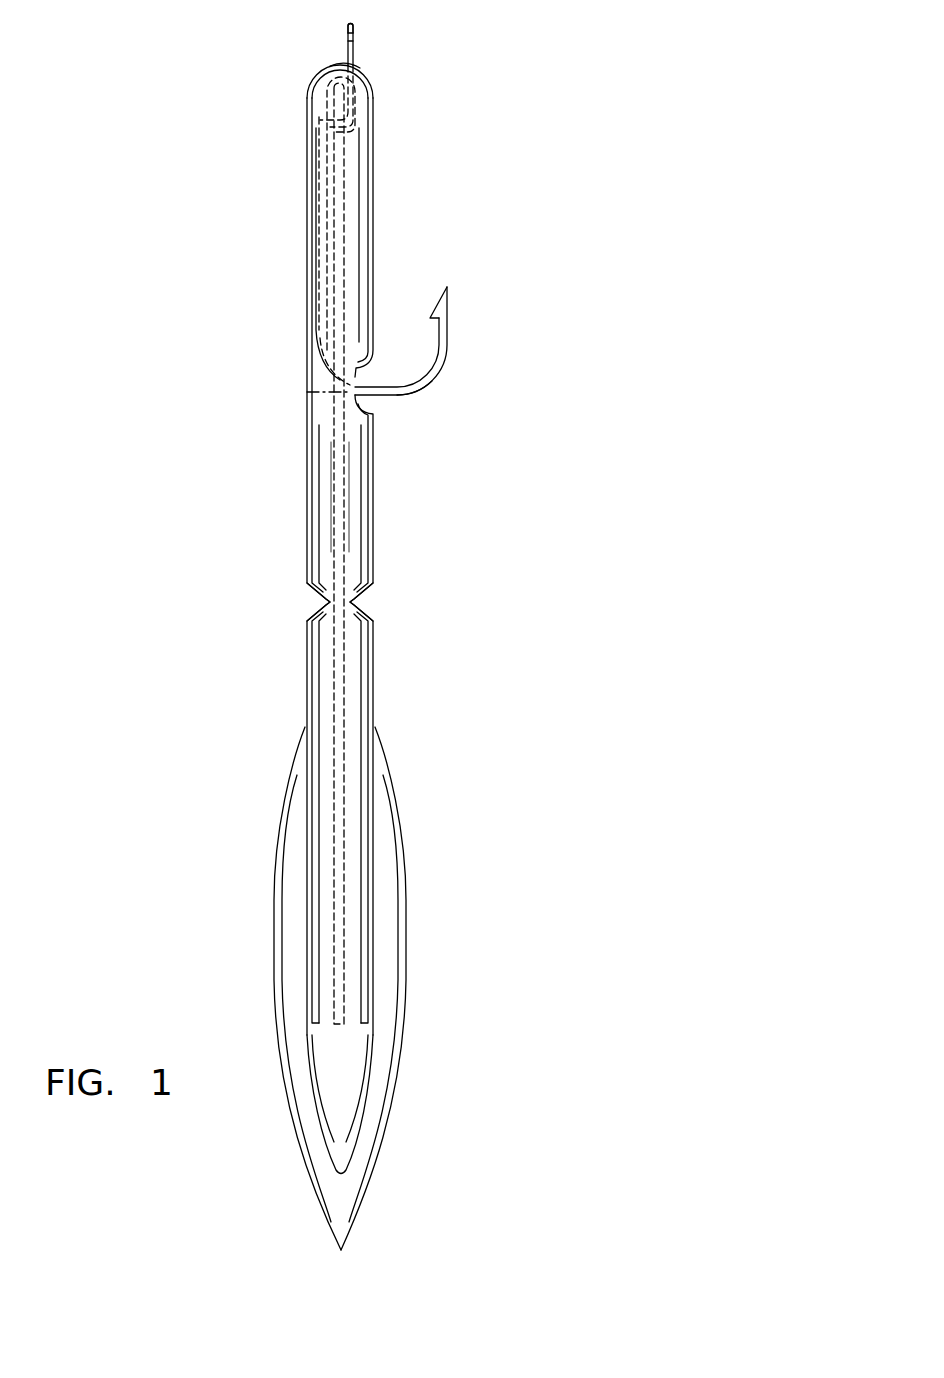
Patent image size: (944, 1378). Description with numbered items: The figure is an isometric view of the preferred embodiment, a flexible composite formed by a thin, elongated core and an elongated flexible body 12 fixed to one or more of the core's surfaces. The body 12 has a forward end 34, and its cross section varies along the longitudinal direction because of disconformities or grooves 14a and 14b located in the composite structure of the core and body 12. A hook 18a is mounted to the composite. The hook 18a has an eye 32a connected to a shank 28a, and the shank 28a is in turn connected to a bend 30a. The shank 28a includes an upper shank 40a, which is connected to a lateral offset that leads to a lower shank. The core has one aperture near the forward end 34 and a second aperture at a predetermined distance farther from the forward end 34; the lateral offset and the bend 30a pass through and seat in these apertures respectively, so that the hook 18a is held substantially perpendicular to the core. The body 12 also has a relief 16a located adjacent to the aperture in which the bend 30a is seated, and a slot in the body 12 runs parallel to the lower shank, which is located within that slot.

The elongated flexible body 12 is at (405, 890).
The forward end 34 is at (373, 163).
The groove 14a is at (330, 602).
The groove 14b is at (350, 602).
The relief 16a is at (355, 378).
The hook 18a is at (469, 337).
The bend 30a is at (420, 383).
The upper shank 40a is at (355, 42).
The eye 32a is at (346, 37).
The shank 28a is at (378, 64).